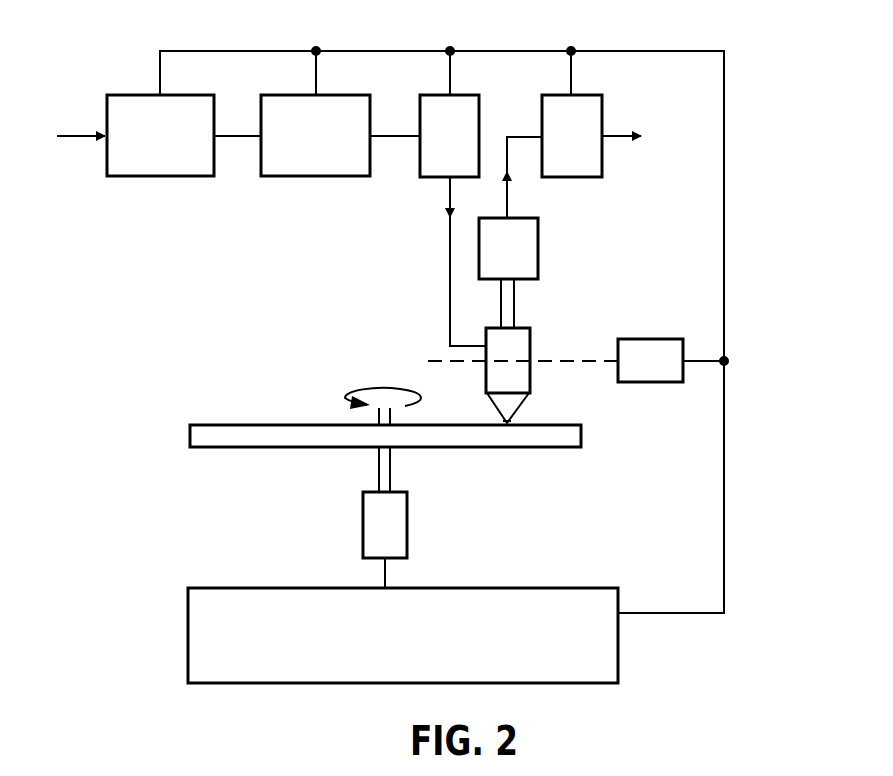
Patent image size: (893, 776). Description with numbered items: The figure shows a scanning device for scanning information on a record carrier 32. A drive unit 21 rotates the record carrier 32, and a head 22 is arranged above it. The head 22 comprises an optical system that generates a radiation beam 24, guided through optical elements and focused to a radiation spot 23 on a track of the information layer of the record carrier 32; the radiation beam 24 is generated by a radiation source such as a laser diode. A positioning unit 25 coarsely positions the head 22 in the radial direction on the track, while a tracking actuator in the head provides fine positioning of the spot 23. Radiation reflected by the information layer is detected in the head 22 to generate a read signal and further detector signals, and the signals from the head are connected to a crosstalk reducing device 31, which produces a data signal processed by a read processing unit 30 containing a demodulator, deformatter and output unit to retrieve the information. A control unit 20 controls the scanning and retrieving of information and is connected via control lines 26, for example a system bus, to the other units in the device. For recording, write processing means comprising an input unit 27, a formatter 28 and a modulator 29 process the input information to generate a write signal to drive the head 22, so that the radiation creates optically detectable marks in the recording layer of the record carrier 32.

The control unit 20 is at (590, 588).
The drive unit 21 is at (407, 520).
The head 22 is at (530, 343).
The radiation spot 23 is at (510, 423).
The radiation beam 24 is at (497, 405).
The positioning unit 25 is at (664, 382).
The control lines 26 is at (723, 165).
The input unit 27 is at (155, 163).
The formatter 28 is at (287, 163).
The modulator 29 is at (433, 176).
The read processing unit 30 is at (595, 110).
The crosstalk reducing device 31 is at (538, 247).
The record carrier 32 is at (575, 449).